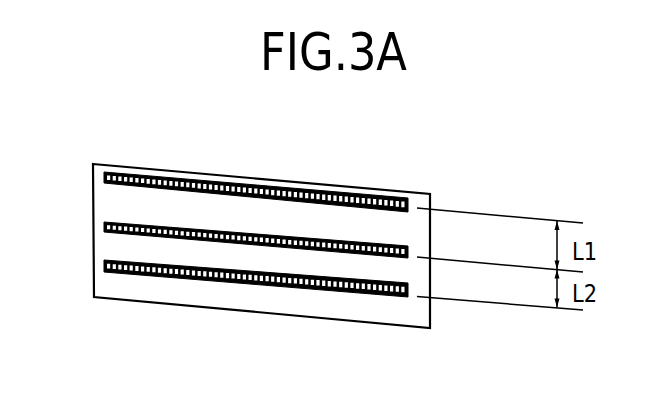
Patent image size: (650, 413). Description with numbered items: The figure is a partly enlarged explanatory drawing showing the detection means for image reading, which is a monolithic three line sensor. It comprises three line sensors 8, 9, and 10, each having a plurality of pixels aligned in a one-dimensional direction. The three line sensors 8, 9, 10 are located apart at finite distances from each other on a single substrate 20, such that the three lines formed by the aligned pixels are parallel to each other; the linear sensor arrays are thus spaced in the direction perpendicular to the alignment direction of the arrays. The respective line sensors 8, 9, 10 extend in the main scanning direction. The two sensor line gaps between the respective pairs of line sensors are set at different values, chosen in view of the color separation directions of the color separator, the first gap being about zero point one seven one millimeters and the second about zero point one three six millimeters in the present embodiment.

The line sensor 8 is at (177, 180).
The line sensor 9 is at (122, 236).
The line sensor 10 is at (187, 280).
The substrate 20 is at (413, 193).